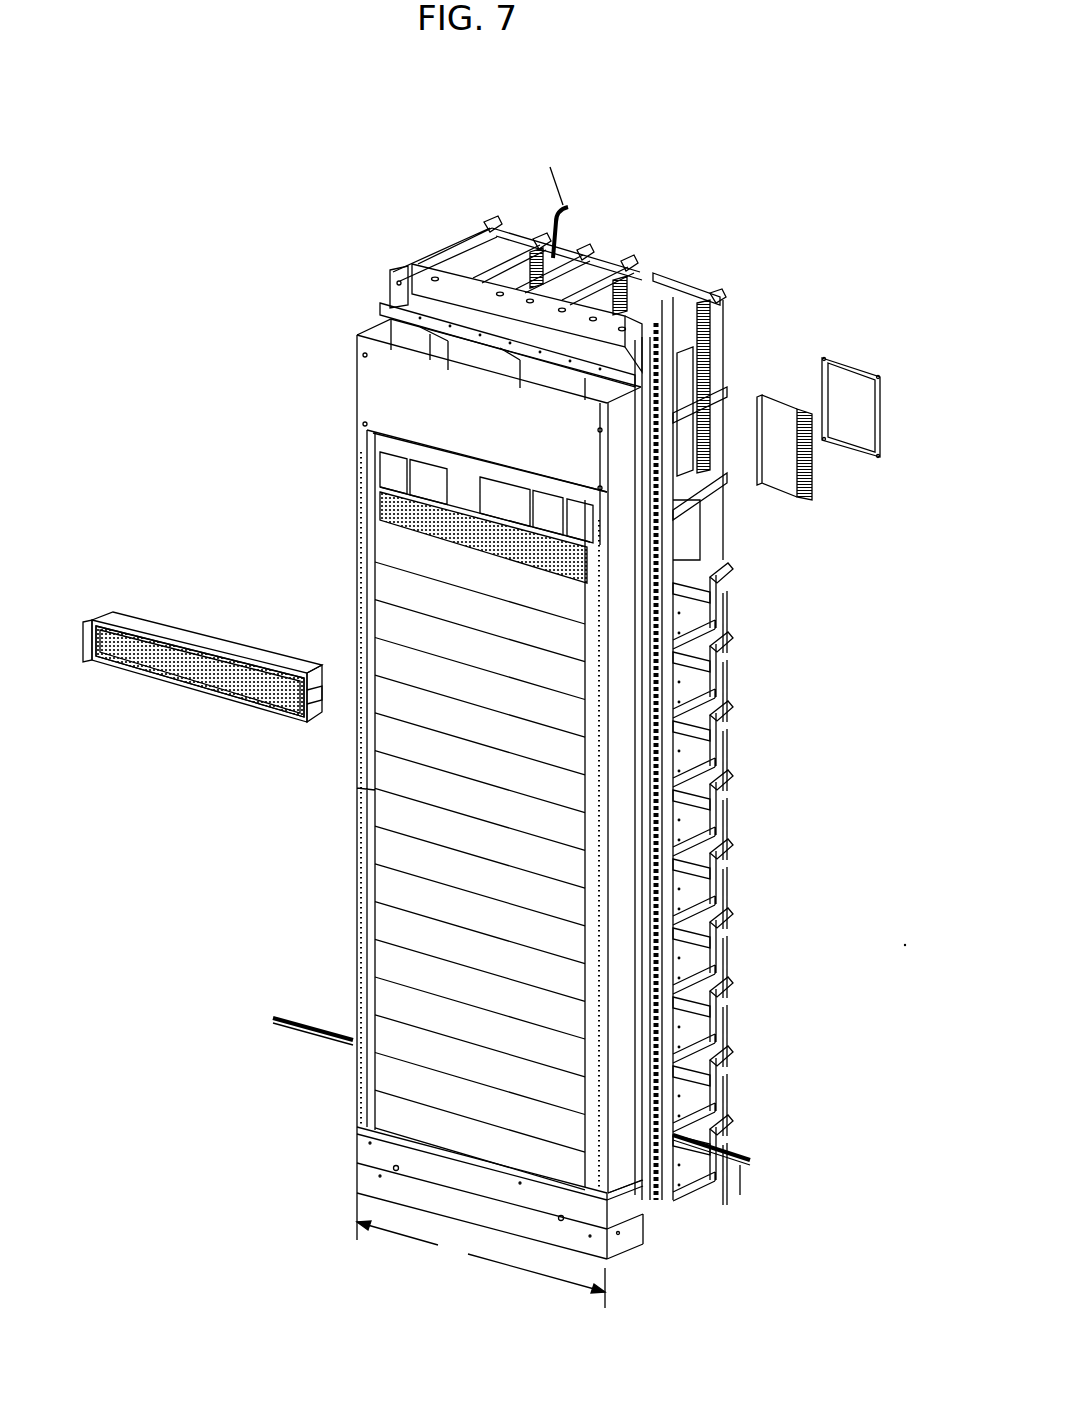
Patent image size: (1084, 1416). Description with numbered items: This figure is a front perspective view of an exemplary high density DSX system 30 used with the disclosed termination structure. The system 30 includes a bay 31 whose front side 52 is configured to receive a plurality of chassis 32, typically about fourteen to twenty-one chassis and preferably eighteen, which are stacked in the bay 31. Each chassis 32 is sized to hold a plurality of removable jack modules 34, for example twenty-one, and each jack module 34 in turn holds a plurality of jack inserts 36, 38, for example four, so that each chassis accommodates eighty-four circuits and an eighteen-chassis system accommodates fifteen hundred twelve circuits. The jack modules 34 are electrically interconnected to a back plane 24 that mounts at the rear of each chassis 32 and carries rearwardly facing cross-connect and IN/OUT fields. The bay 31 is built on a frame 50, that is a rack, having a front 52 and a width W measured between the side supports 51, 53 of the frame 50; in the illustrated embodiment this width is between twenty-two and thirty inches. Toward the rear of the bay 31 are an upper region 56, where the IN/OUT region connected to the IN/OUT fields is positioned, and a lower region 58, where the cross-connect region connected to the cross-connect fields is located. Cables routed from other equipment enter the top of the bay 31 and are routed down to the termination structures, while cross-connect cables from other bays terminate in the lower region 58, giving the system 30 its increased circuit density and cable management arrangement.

The high density DSX system 30 is at (255, 340).
The bay 31 is at (327, 790).
The chassis 32 is at (128, 626).
The jack module 34 is at (282, 680).
The jack insert 36 is at (260, 708).
The jack insert 38 is at (271, 708).
The back plane 24 is at (321, 694).
The frame 50 is at (425, 272).
The side support 51 is at (655, 1143).
The front side 52 is at (310, 1087).
The side support 53 is at (357, 556).
The upper region 56 is at (760, 298).
The lower region 58 is at (792, 780).